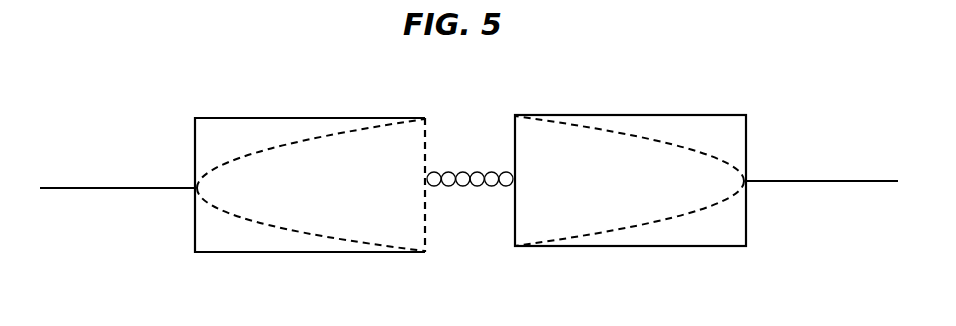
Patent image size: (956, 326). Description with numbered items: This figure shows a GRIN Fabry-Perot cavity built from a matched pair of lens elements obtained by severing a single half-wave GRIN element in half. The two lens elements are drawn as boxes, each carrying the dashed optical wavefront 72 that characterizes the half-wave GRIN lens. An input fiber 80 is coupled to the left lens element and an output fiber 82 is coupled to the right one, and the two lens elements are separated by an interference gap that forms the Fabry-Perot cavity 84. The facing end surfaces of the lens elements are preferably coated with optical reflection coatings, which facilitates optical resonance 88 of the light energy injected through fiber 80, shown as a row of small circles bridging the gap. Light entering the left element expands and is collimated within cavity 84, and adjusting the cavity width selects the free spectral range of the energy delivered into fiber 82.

The optical wavefront 72 is at (265, 227).
The fiber 80 is at (77, 190).
The fiber 82 is at (822, 183).
The Fabry-Perot cavity 84 is at (465, 222).
The optical resonance 88 is at (481, 171).